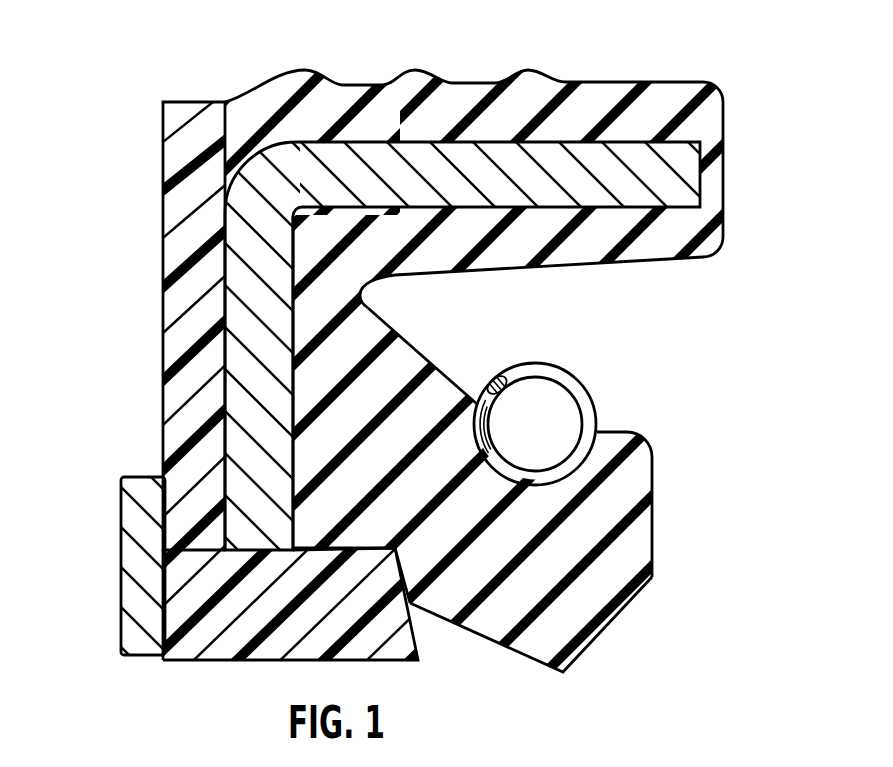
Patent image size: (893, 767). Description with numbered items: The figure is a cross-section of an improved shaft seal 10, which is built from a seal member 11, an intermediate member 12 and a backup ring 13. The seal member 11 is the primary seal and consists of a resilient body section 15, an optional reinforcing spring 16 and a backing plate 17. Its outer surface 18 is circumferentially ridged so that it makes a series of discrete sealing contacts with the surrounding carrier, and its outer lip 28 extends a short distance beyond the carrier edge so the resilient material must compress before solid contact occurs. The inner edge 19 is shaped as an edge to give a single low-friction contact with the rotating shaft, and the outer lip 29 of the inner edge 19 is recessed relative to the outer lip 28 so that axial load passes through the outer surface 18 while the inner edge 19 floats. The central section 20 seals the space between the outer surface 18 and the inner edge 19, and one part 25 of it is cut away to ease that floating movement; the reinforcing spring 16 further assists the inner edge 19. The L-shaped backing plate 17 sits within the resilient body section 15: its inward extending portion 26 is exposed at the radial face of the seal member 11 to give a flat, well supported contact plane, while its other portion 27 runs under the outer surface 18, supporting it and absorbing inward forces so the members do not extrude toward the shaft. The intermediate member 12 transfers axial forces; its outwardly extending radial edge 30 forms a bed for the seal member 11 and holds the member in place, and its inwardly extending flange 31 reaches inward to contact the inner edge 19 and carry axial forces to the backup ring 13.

The shaft seal 10 is at (446, 383).
The seal member 11 is at (645, 262).
The intermediate member 12 is at (152, 211).
The backup ring 13 is at (130, 548).
The resilient body section 15 is at (365, 303).
The reinforcing spring 16 is at (585, 387).
The backing plate 17 is at (273, 175).
The outer surface 18 is at (403, 84).
The inner edge 19 is at (558, 673).
The central section 20 is at (417, 353).
The cutaway part 25 is at (532, 70).
The inward extending portion 26 is at (233, 387).
The other portion of the backing plate 27 is at (415, 157).
The outer lip 28 is at (723, 167).
The outer lip of the inner edge 29 is at (652, 510).
The outwardly extending radial edge 30 is at (190, 323).
The inwardly extending flange 31 is at (275, 650).